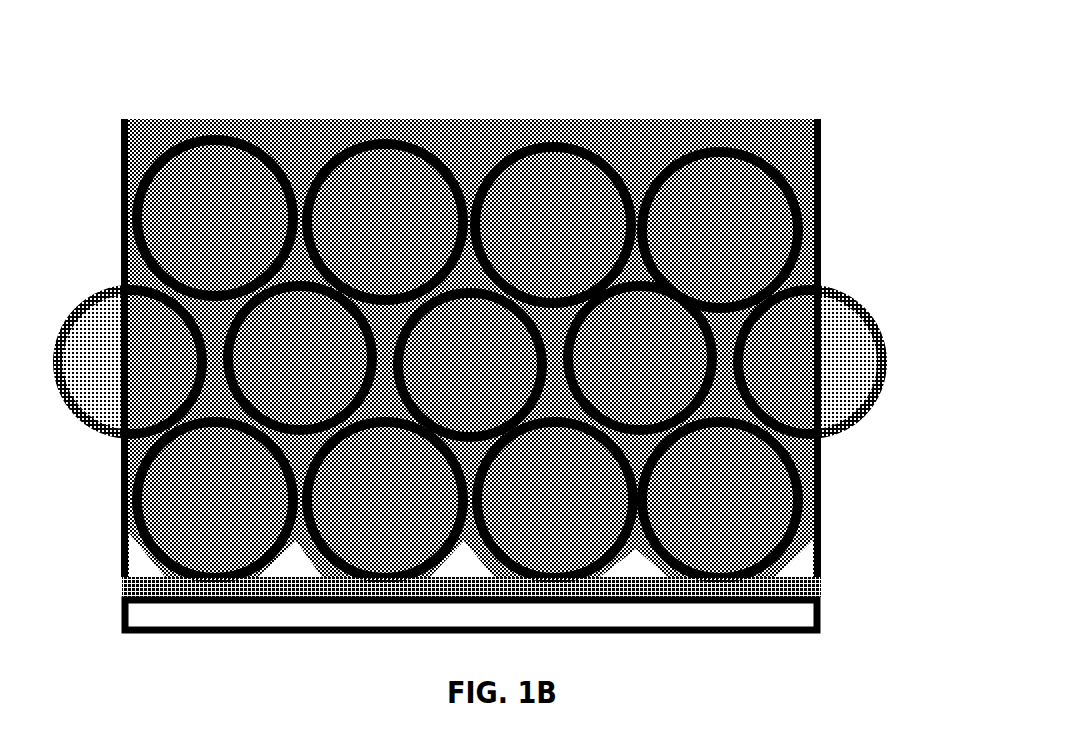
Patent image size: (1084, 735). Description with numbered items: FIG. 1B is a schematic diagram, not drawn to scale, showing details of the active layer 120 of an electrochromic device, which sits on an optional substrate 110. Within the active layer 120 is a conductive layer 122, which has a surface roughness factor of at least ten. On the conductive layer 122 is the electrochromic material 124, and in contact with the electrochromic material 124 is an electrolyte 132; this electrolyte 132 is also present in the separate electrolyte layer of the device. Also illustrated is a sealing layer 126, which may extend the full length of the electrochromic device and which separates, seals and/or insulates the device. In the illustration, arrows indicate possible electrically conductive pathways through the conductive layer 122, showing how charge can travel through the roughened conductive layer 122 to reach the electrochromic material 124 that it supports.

The substrate 110 is at (471, 615).
The active layer 120 is at (498, 314).
The conductive layer 122 is at (798, 463).
The electrochromic material 124 is at (733, 141).
The sealing layer 126 is at (121, 140).
The electrolyte 132 is at (471, 348).